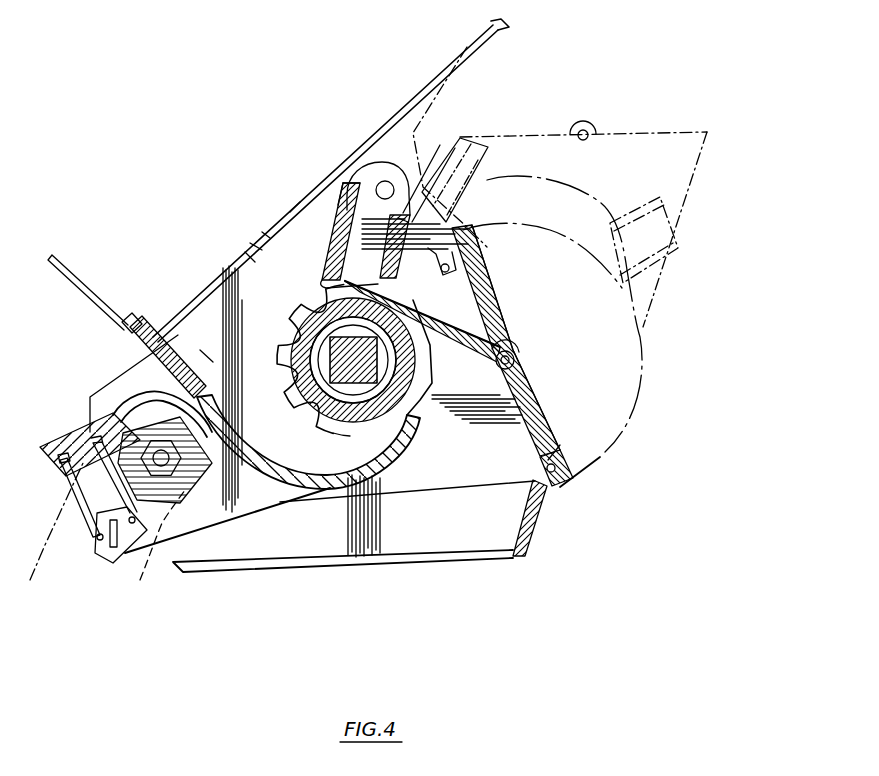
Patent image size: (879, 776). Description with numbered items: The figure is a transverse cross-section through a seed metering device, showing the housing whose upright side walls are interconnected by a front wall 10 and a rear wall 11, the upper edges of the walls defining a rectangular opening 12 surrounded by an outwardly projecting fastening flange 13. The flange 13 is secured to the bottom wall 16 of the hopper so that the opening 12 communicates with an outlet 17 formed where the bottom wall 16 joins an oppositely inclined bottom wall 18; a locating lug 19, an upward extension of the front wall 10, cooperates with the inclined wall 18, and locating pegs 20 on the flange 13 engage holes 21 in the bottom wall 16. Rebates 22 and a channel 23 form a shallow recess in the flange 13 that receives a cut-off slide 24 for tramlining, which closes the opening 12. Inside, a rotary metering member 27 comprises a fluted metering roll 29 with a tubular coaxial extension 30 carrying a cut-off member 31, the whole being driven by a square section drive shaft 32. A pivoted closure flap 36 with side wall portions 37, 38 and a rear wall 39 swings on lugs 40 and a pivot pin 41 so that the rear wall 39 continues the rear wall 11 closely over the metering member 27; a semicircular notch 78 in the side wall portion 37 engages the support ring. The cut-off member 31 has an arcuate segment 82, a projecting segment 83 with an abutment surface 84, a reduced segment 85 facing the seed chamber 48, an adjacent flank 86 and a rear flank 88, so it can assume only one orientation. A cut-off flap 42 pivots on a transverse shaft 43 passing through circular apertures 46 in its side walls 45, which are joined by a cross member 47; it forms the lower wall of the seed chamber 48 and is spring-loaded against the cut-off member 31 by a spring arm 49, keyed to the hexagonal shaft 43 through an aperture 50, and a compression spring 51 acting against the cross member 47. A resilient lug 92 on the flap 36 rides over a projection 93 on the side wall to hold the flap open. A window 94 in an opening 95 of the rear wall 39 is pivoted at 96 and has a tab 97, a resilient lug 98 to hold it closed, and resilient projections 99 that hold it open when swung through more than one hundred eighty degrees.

The front wall 10 is at (200, 350).
The rear wall 11 is at (330, 214).
The rectangular opening 12 is at (245, 252).
The fastening flange 13 is at (118, 393).
The bottom wall 16 is at (455, 61).
The outlet 17 is at (343, 183).
The inclined bottom wall 18 is at (57, 258).
The locating lug 19 is at (115, 330).
The locating pegs 20 is at (250, 243).
The holes 21 is at (265, 232).
The rebates 22 is at (293, 210).
The channel 23 is at (357, 168).
The cut-off slide 24 is at (431, 82).
The rotary metering member 27 is at (260, 336).
The fluted metering roll 29 is at (238, 292).
The tubular coaxial extension 30 is at (326, 342).
The cut-off member 31 is at (356, 412).
The square section drive shaft 32 is at (294, 333).
The closure flap 36 is at (626, 114).
The side wall portion 37 is at (642, 178).
The side wall portion 38 is at (510, 473).
The rear wall 39 is at (447, 318).
The lugs 40 is at (392, 180).
The pivot pin 41 is at (398, 185).
The cut-off flap 42 is at (327, 492).
The transverse shaft 43 is at (185, 520).
The side walls 45 is at (250, 508).
The circular apertures 46 is at (140, 580).
The cross member 47 is at (97, 552).
The seed chamber 48 is at (246, 418).
The spring arm 49 is at (87, 424).
The hexagonal section aperture 50 is at (200, 497).
The compression spring 51 is at (63, 487).
The semicircular notch 78 is at (548, 130).
The arcuate segment 82 is at (422, 342).
The projecting segment 83 is at (432, 420).
The abutment surface 84 is at (420, 460).
The reduced segment 85 is at (298, 395).
The flank 86 is at (400, 468).
The rear flank 88 is at (443, 378).
The lug 92 is at (448, 132).
The projection 93 is at (466, 132).
The window 94 is at (523, 407).
The opening 95 is at (522, 375).
The window pivot 96 is at (517, 352).
The tab 97 is at (603, 457).
The resilient lug 98 is at (513, 490).
The resilient projections 99 is at (480, 264).